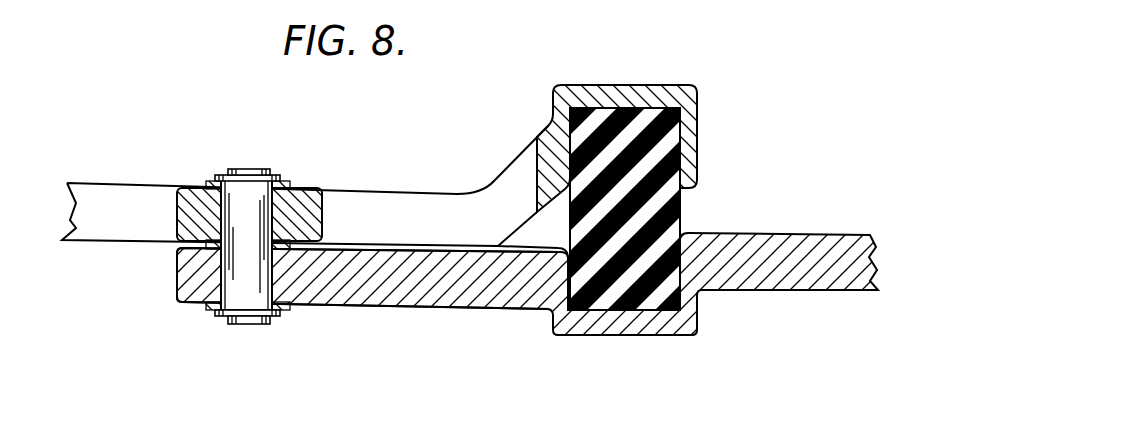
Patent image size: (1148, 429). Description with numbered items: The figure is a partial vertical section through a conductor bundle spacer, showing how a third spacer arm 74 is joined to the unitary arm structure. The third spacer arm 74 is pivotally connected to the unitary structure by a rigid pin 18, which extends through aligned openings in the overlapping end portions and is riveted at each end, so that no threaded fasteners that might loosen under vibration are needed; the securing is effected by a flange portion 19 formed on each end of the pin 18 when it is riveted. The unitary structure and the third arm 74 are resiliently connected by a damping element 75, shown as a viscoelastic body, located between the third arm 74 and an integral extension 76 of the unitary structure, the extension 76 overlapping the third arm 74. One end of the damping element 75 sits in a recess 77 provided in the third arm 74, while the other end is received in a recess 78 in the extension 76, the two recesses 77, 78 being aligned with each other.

The rigid pin 18 is at (250, 297).
The flange portion 19 is at (250, 168).
The third spacer arm 74 is at (448, 304).
The damping element 75 is at (683, 217).
The integral extension 76 is at (405, 191).
The recess 77 is at (654, 306).
The recess 78 is at (623, 108).